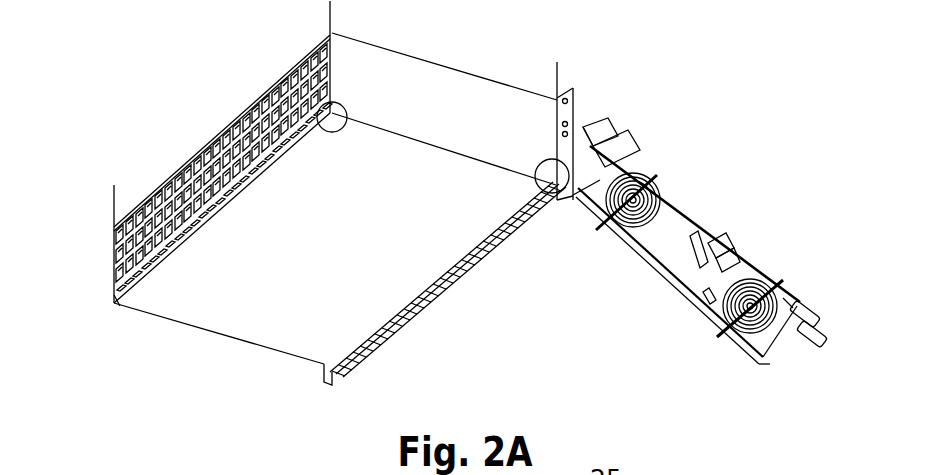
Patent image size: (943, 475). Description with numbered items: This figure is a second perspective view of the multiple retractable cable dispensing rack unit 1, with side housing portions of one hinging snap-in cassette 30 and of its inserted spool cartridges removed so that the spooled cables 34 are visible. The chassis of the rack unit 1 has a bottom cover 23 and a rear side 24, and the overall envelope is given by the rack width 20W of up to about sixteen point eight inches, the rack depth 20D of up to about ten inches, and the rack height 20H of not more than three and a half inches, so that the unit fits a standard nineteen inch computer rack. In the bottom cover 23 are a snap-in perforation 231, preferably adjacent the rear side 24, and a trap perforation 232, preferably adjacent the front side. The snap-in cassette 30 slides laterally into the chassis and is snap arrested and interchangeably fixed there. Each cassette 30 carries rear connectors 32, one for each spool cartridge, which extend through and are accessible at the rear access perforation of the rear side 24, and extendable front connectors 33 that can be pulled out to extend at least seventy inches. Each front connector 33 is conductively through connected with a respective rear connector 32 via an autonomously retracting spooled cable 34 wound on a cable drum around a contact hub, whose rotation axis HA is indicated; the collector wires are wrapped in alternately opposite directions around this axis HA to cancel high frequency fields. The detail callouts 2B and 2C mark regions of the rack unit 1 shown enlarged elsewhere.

The multiple retractable cable dispensing rack unit 1 is at (505, 338).
The detail view indicator 2B is at (297, 67).
The detail view indicator 2C is at (559, 205).
The rack width 20W is at (114, 185).
The rack depth 20D is at (332, 2).
The rack height 20H is at (573, 88).
The bottom cover 23 is at (277, 340).
The snap-in perforation 231 is at (123, 305).
The trap perforation 232 is at (350, 373).
The rear side 24 is at (175, 160).
The snap-in cassette 30 is at (682, 340).
The rear connector 32 is at (592, 125).
The extendable front connector 33 is at (803, 305).
The spooled cable 34 is at (730, 312).
The rotation axis HA is at (722, 334).